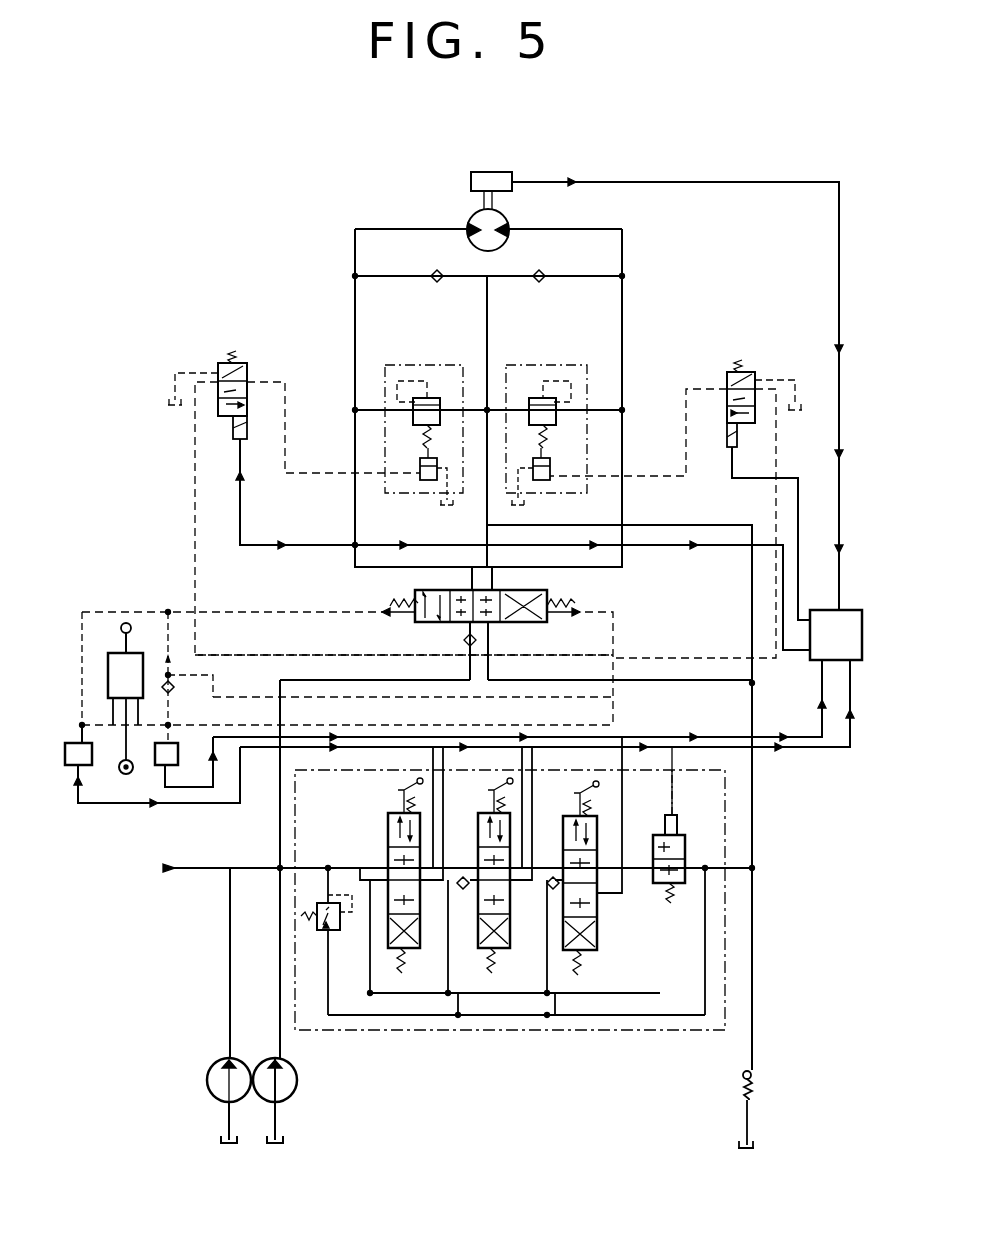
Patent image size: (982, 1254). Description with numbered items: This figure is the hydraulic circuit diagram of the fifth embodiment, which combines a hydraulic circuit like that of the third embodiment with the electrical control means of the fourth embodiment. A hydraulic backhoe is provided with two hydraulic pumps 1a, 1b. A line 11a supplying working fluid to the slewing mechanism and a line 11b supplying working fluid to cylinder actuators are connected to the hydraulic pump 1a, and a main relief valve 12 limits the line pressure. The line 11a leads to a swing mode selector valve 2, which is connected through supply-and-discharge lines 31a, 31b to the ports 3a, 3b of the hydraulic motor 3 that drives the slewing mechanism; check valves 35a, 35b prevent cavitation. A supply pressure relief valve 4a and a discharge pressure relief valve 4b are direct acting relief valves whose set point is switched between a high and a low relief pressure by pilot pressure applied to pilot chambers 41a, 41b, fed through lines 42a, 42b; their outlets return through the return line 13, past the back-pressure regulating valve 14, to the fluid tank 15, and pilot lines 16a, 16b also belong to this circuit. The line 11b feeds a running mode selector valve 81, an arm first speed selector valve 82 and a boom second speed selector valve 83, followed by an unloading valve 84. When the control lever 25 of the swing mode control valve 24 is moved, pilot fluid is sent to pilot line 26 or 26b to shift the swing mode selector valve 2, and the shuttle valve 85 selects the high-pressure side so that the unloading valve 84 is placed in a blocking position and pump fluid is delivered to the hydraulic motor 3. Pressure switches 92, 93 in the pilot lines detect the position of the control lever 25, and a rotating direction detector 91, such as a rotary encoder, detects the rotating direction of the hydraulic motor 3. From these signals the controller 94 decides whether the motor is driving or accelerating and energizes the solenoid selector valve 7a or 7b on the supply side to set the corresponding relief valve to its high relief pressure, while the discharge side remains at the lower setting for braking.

The rotating direction detector 91 is at (472, 180).
The hydraulic motor 3 is at (508, 224).
The port of hydraulic motor 3a is at (470, 234).
The port of hydraulic motor 3b is at (508, 234).
The check valve 35a is at (437, 282).
The check valve 35b is at (549, 282).
The supply pressure relief valve 4a is at (430, 365).
The discharge pressure relief valve 4b is at (526, 365).
The pilot chamber 41a is at (426, 483).
The pilot chamber 41b is at (538, 483).
The pilot line 42a is at (306, 476).
The pilot line 42b is at (632, 481).
The solenoid selector valve 7a is at (221, 364).
The solenoid selector valve 7b is at (748, 372).
The fluid tank 15 is at (174, 406).
The supply-and-discharge line 31a is at (355, 430).
The main line 31b is at (622, 430).
The pilot line 16a is at (193, 498).
The pilot line 16b is at (776, 518).
The controller 94 is at (836, 610).
The swing mode selector valve 2 is at (554, 590).
The pilot line 26 is at (222, 612).
The pilot line 26b is at (614, 638).
The control lever 25 is at (126, 622).
The swing mode control valve 24 is at (138, 653).
The shuttle valve 85 is at (176, 688).
The pressure switch 92 is at (76, 790).
The pressure switch 93 is at (162, 786).
The line 11a is at (280, 840).
The line 11b is at (316, 868).
The main relief valve 12 is at (318, 930).
The running mode selector valve 81 is at (388, 820).
The arm first speed selector valve 82 is at (492, 820).
The boom second speed selector valve 83 is at (570, 819).
The unloading valve 84 is at (678, 835).
The return line 13 is at (753, 950).
The back-pressure regulating valve 14 is at (752, 1073).
The hydraulic pump 1a is at (295, 1082).
The hydraulic pump 1b is at (207, 1082).